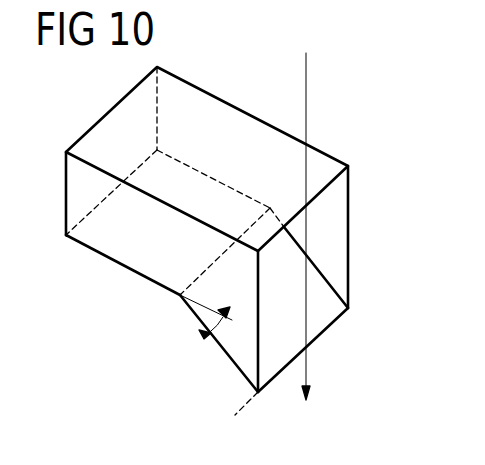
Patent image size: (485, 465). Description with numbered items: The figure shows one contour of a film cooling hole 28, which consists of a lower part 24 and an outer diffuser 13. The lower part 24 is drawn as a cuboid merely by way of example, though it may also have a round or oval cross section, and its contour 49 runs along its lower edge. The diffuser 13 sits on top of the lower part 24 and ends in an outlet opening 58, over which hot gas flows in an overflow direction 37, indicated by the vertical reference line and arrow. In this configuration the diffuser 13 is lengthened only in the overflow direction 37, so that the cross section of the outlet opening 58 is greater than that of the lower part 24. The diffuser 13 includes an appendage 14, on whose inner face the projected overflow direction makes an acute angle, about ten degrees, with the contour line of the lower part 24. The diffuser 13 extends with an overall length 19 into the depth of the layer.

The diffuser 13 is at (246, 347).
The appendage 14 is at (330, 345).
The overall length 19 is at (255, 409).
The lower part 24 is at (108, 242).
The film cooling hole 28 is at (332, 126).
The overflow direction 37 is at (306, 73).
The contour 49 is at (147, 278).
The outlet opening 58 is at (335, 220).